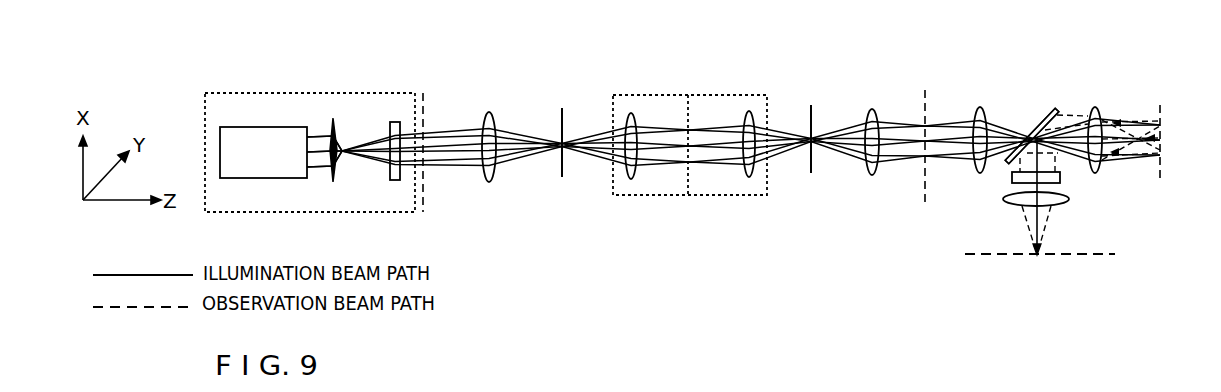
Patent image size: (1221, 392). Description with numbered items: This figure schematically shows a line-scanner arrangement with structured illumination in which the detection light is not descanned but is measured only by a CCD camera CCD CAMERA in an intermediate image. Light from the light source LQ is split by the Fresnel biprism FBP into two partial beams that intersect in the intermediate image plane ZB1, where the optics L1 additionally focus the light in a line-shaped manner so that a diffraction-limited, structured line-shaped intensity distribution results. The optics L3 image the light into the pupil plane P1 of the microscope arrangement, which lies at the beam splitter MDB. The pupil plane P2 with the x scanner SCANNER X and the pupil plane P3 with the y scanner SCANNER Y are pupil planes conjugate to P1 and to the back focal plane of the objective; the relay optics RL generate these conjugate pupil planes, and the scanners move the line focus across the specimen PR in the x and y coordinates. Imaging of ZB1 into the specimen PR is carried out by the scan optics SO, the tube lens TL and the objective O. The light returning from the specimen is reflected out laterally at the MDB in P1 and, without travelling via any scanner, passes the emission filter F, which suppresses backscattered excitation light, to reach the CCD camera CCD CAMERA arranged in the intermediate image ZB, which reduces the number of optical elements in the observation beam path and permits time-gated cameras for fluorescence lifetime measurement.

The light source LQ is at (263, 168).
The Fresnel biprism FBP is at (331, 164).
The optics L1 is at (394, 166).
The intermediate image plane ZB1 is at (324, 136).
The additional optics L3 is at (490, 129).
The pupil plane P2 is at (559, 129).
The x scanner SCANNER X is at (565, 112).
The intermediate image plane ZB is at (776, 138).
The relay optics RL is at (690, 140).
The y scanner SCANNER Y is at (815, 108).
The pupil plane P3 is at (808, 126).
The scan optics SO is at (869, 124).
The tube lens TL is at (1034, 143).
The pupil plane P1 is at (1032, 109).
The MDB beam splitter MDB is at (1032, 121).
The objective O is at (1095, 120).
The specimen PR is at (1160, 124).
The emission filter F is at (1046, 176).
The CCD camera CCD CAMERA is at (1040, 211).